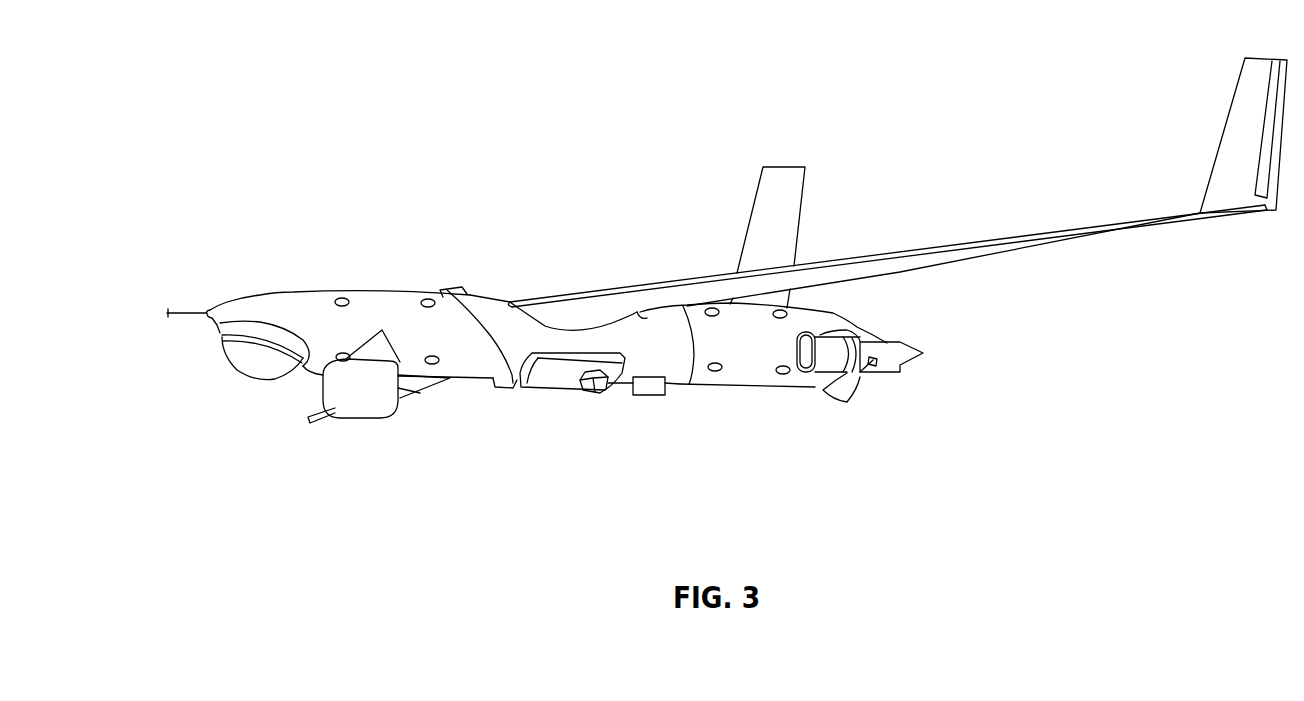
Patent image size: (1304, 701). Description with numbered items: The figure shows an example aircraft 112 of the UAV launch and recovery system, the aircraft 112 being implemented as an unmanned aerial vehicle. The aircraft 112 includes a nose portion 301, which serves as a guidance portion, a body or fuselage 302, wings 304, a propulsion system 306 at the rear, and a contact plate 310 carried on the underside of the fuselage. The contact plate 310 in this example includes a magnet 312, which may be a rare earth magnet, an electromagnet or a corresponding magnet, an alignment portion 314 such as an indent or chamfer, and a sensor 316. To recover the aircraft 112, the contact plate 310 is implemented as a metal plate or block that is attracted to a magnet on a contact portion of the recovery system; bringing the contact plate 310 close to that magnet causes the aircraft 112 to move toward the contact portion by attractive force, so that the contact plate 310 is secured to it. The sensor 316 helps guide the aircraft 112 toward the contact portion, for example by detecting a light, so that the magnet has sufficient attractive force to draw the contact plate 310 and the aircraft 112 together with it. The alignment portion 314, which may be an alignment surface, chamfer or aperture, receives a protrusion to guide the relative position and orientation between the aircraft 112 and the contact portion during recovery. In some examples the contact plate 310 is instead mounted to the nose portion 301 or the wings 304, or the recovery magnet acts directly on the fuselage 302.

The aircraft 112 is at (178, 132).
The nose portion 301 is at (282, 305).
The fuselage 302 is at (672, 389).
The wings 304 is at (887, 249).
The propulsion system 306 is at (883, 358).
The contact plate 310 is at (555, 393).
The magnet 312 is at (595, 395).
The alignment portion 314 is at (447, 290).
The sensor 316 is at (650, 397).